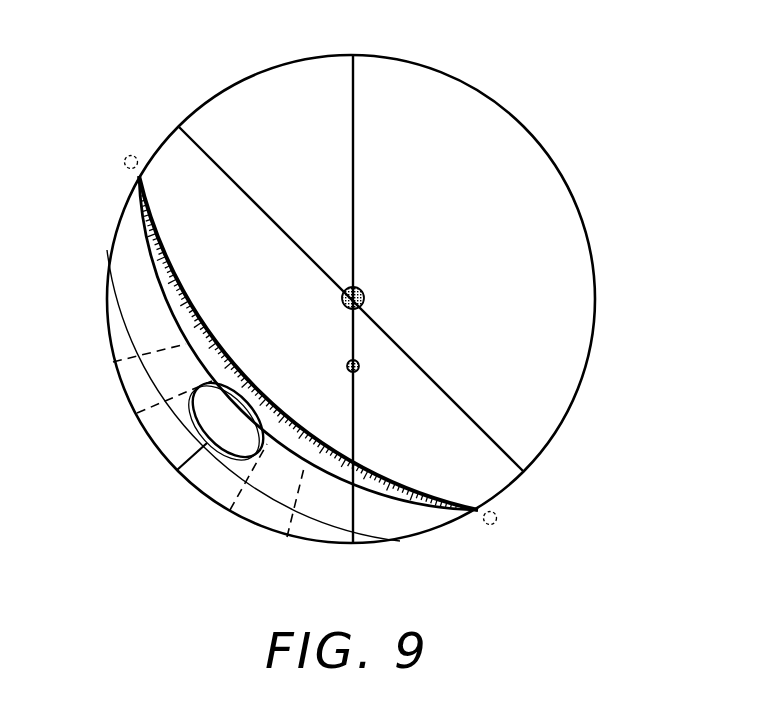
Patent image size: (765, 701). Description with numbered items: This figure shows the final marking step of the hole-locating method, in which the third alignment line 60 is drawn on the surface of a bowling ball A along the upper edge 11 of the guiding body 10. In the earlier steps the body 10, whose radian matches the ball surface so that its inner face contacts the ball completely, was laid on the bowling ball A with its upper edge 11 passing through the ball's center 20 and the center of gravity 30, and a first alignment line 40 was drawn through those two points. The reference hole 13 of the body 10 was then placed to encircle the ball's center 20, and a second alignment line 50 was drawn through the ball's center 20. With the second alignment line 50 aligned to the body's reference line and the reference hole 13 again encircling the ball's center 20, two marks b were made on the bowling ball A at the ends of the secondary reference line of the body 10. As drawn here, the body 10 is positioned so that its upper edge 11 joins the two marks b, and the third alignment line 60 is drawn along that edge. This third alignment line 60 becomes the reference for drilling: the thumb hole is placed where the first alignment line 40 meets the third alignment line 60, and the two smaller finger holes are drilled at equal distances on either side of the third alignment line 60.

The bowling ball A is at (565, 178).
The body 10 is at (142, 430).
The upper edge 11 is at (165, 262).
The reference hole 13 is at (230, 433).
The ball's center 20 is at (367, 302).
The center of gravity 30 is at (365, 368).
The first alignment line 40 is at (357, 124).
The second alignment line 50 is at (226, 172).
The third alignment line 60 is at (155, 213).
The marks b is at (123, 158).